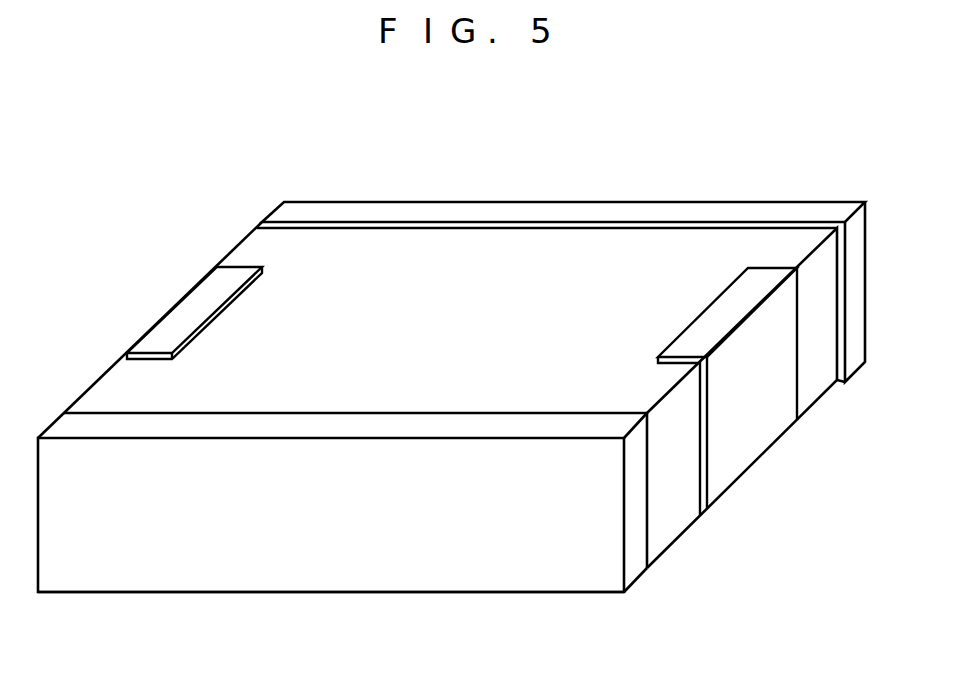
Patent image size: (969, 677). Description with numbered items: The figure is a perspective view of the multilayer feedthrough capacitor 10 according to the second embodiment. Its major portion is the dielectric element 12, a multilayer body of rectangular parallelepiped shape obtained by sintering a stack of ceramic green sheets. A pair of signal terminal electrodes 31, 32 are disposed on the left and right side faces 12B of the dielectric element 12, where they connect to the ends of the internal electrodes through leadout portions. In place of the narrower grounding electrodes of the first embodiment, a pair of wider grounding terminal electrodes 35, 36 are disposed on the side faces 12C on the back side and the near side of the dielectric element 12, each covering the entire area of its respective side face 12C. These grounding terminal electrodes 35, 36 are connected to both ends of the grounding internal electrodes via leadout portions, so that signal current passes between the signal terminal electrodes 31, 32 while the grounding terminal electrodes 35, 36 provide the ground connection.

The multilayer feedthrough capacitor 10 is at (646, 187).
The dielectric element 12 is at (348, 240).
The side face 12B is at (102, 383).
The side face 12C is at (733, 200).
The signal terminal electrode 31 is at (202, 305).
The signal terminal electrode 32 is at (737, 458).
The grounding terminal electrode 35 is at (533, 207).
The grounding terminal electrode 36 is at (260, 572).